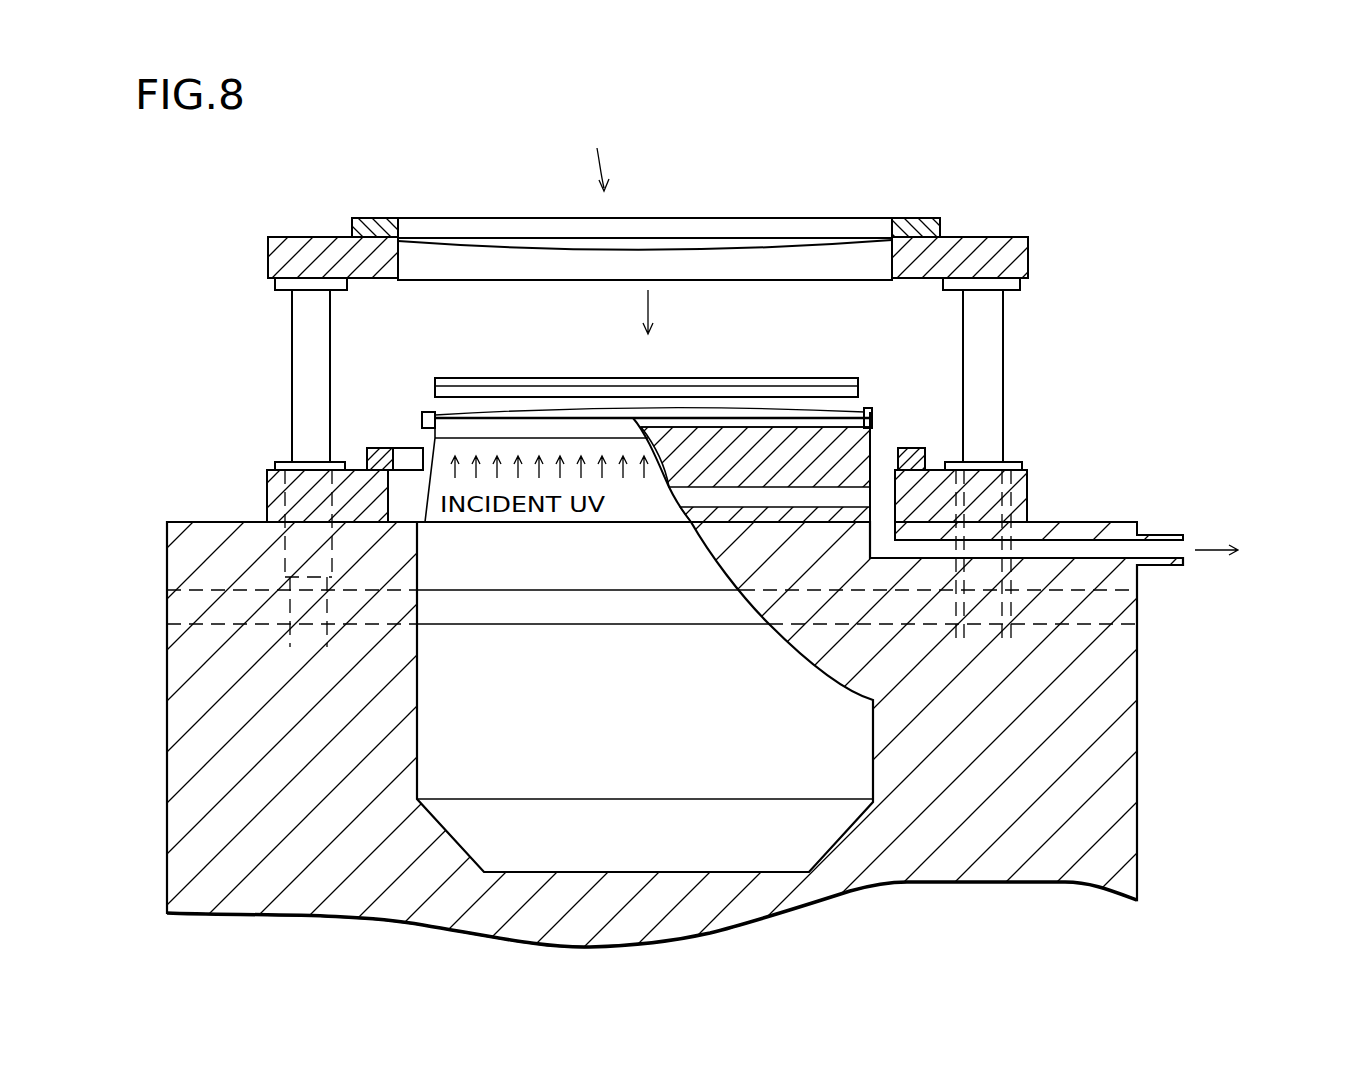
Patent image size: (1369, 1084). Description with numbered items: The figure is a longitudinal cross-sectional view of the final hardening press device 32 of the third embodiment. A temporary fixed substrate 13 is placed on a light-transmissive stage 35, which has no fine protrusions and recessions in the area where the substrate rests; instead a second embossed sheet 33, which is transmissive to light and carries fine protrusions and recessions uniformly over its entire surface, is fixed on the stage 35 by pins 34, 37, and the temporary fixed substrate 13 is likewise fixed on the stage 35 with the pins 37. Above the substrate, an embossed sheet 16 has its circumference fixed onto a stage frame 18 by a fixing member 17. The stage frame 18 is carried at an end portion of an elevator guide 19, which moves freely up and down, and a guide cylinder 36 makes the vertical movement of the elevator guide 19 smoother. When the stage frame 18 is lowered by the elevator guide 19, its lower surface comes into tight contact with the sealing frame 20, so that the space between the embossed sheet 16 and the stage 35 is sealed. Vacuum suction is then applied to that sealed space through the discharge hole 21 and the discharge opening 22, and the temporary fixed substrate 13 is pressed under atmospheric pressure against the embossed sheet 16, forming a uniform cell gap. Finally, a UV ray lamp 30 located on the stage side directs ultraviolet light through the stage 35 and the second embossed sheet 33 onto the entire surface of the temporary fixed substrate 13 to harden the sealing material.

The temporary fixed substrate 13 is at (858, 386).
The embossed sheet 16 is at (780, 245).
The fixing member 17 is at (382, 228).
The stage frame 18 is at (284, 243).
The elevator guide 19 is at (303, 427).
The sealing frame 20 is at (378, 448).
The discharge hole 21 is at (893, 447).
The discharge opening 22 is at (1163, 565).
The UV ray lamp 30 is at (830, 775).
The final hardening press device 32 is at (597, 152).
The second embossed sheet 33 is at (703, 410).
The pin 34 is at (873, 410).
The stage 35 is at (520, 422).
The guide cylinder 36 is at (1020, 468).
The pin 37 is at (425, 412).